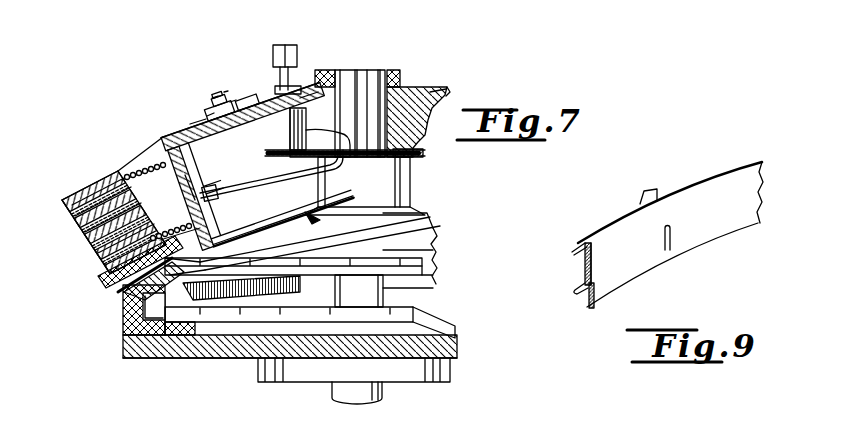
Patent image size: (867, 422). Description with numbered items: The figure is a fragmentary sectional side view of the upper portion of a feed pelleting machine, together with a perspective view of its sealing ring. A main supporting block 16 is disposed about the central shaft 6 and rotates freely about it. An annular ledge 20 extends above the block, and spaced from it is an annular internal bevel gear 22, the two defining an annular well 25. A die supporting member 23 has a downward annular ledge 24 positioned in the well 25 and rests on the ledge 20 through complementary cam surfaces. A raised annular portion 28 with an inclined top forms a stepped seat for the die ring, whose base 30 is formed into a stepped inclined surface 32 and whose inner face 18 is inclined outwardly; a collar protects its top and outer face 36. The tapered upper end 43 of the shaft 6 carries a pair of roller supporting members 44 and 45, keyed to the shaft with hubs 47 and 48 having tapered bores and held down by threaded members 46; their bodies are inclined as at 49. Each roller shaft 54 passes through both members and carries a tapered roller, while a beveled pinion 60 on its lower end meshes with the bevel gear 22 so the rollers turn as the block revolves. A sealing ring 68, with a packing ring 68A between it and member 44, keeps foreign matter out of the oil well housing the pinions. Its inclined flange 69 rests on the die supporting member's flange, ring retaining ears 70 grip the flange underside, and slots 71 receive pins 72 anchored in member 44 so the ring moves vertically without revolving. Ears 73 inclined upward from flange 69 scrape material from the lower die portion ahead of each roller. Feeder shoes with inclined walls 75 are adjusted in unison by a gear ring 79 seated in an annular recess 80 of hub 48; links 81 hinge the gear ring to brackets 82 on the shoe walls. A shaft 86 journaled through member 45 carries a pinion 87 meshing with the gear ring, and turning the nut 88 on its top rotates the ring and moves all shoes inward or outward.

In FIG. 7, the shaft 6 is at (367, 69).
In FIG. 7, the main supporting block 16 is at (220, 360).
In FIG. 7, the inner face 18 is at (157, 163).
In FIG. 7, the annular ledge 20 is at (122, 313).
In FIG. 7, the annular internal bevel gear 22 is at (160, 356).
In FIG. 7, the die supporting member 23 is at (114, 294).
In FIG. 7, the annular ledge 24 is at (142, 316).
In FIG. 7, the annular well 25 is at (155, 319).
In FIG. 7, the raised annular portion 28 is at (108, 281).
In FIG. 7, the base 30 is at (165, 237).
In FIG. 7, the stepped inclined surface 32 is at (105, 278).
In FIG. 7, the outer face 36 is at (72, 202).
In FIG. 7, the upper end 43 is at (405, 92).
In FIG. 7, the roller supporting member 44 is at (420, 209).
In FIG. 7, the roller supporting member 45 is at (432, 93).
In FIG. 7, the threaded members 46 is at (392, 69).
In FIG. 7, the hub 47 is at (410, 181).
In FIG. 7, the hub 48 is at (410, 133).
In FIG. 7, the inclined body portion 49 is at (425, 231).
In FIG. 7, the shaft 54 is at (307, 263).
In FIG. 7, the beveled pinion 60 is at (280, 300).
In FIG. 7, the sealing ring 68 is at (131, 356).
In FIG. 9, the sealing ring 68 is at (633, 270).
In FIG. 7, the packing ring 68A is at (371, 268).
In FIG. 7, the annular inclined flange 69 is at (220, 234).
In FIG. 9, the annular inclined flange 69 is at (578, 251).
In FIG. 9, the ring retaining ears 70 is at (578, 293).
In FIG. 9, the slots 71 is at (672, 233).
In FIG. 7, the pin 72 is at (280, 246).
In FIG. 9, the ears 73 is at (655, 190).
In FIG. 7, the inclined wall 75 is at (172, 194).
In FIG. 7, the gear ring 79 is at (336, 160).
In FIG. 7, the annular recess 80 is at (424, 153).
In FIG. 7, the links 81 is at (290, 176).
In FIG. 7, the brackets 82 is at (267, 182).
In FIG. 7, the shaft 86 is at (295, 92).
In FIG. 7, the pinion 87 is at (265, 153).
In FIG. 7, the nut 88 is at (289, 50).